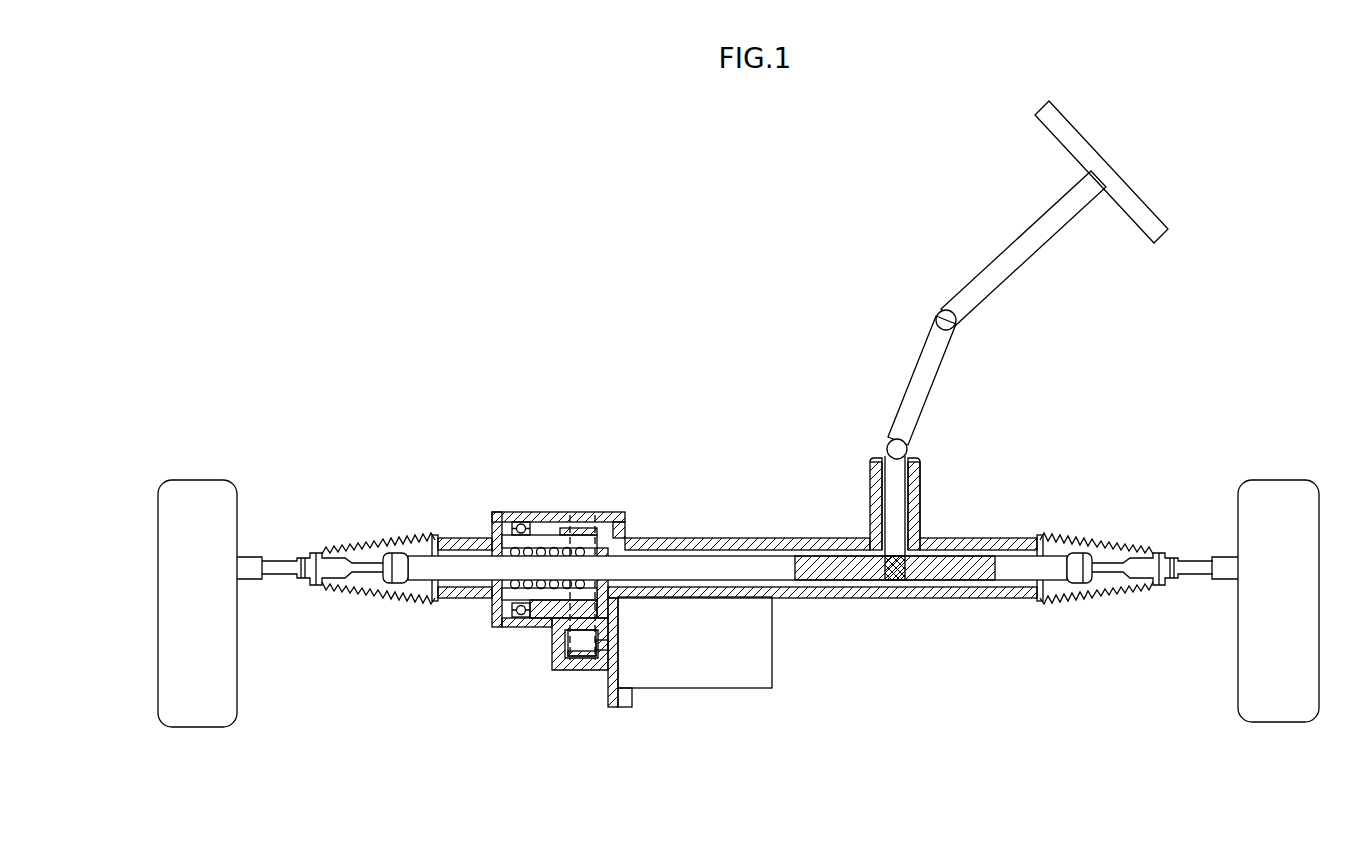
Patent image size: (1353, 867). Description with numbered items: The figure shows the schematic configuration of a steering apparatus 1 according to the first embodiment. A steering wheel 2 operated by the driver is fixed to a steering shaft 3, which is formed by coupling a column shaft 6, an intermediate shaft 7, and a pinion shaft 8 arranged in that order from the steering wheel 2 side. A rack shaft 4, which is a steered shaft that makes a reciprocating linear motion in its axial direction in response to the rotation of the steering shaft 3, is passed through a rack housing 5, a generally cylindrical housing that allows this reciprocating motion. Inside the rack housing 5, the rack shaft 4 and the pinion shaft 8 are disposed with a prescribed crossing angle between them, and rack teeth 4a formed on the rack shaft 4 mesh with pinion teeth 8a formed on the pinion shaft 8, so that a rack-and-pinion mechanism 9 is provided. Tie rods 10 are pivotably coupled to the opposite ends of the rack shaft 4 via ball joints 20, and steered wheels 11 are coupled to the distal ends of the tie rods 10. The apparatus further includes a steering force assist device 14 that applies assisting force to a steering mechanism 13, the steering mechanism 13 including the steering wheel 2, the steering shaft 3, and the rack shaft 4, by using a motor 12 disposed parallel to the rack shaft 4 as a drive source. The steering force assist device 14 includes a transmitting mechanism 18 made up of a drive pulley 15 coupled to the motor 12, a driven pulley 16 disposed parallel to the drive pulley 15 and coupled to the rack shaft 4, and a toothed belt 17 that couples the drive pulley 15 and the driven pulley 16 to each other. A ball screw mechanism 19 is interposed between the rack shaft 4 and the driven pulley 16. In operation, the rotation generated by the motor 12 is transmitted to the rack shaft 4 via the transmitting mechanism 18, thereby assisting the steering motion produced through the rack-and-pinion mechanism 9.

The steering apparatus 1 is at (409, 187).
The steering wheel 2 is at (1078, 131).
The steering shaft 3 is at (853, 283).
The rack shaft 4 is at (737, 570).
The rack teeth 4a is at (832, 587).
The rack housing 5 is at (700, 538).
The column shaft 6 is at (957, 297).
The intermediate shaft 7 is at (917, 385).
The pinion shaft 8 is at (880, 461).
The pinion teeth 8a is at (898, 587).
The rack-and-pinion mechanism 9 is at (936, 619).
The tie rod 10 is at (285, 578).
The steered wheel 11 is at (202, 728).
The motor 12 is at (698, 684).
The steering mechanism 13 is at (735, 426).
The steering force assist device 14 is at (514, 751).
The drive pulley 15 is at (552, 644).
The driven pulley 16 is at (569, 521).
The toothed belt 17 is at (505, 622).
The transmitting mechanism 18 is at (552, 671).
The ball screw mechanism 19 is at (613, 523).
The ball joint 20 is at (395, 584).